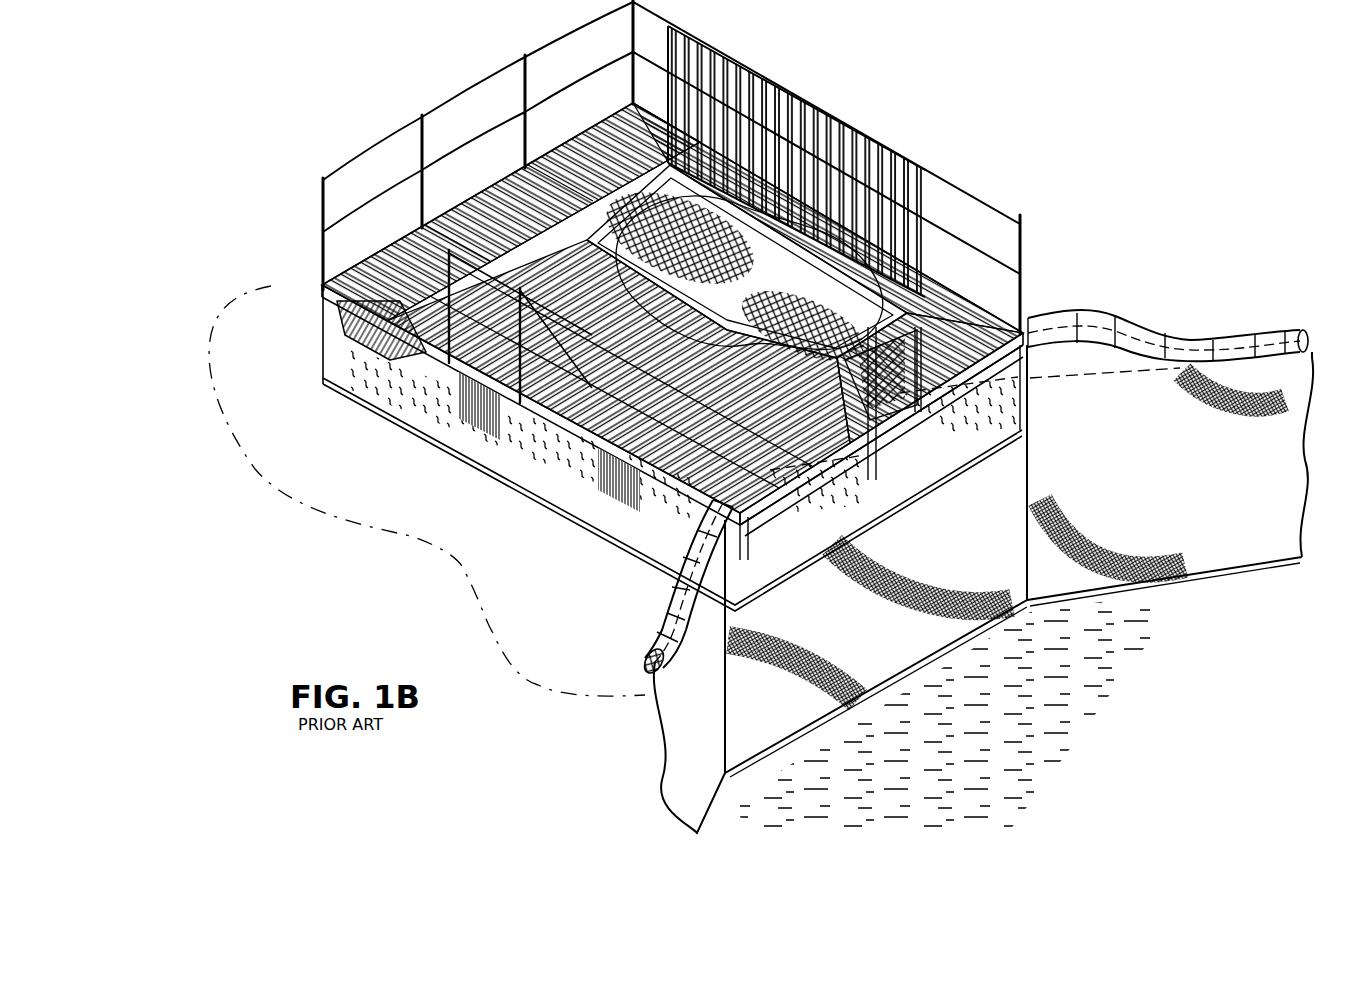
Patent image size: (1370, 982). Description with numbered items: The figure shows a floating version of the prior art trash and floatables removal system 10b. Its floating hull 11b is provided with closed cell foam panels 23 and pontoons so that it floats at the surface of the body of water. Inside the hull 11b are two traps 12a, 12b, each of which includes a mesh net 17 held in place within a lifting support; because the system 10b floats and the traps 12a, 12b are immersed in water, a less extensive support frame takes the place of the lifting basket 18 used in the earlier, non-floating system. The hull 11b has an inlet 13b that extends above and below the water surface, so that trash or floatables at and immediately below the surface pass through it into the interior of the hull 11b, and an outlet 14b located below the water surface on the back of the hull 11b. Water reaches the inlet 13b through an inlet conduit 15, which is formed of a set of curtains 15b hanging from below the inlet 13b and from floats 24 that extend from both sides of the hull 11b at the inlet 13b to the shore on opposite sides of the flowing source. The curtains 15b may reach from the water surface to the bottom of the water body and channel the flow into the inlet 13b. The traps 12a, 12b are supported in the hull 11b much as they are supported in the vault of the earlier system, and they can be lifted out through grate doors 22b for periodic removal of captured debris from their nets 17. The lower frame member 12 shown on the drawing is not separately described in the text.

The floating system 10b is at (336, 102).
The floating hull 11b is at (320, 308).
The lower frame member 12 is at (920, 479).
The trap 12a is at (902, 424).
The trap 12b is at (744, 515).
The inlet 13b is at (903, 486).
The outlet 14b is at (464, 195).
The inlet conduit 15 is at (1304, 412).
The curtains 15b is at (1190, 480).
The mesh net 17 is at (805, 297).
The lifting basket 18 is at (905, 352).
The grate doors 22b is at (935, 192).
The closed cell foam panels 23 is at (341, 336).
The floats 24 is at (1222, 338).